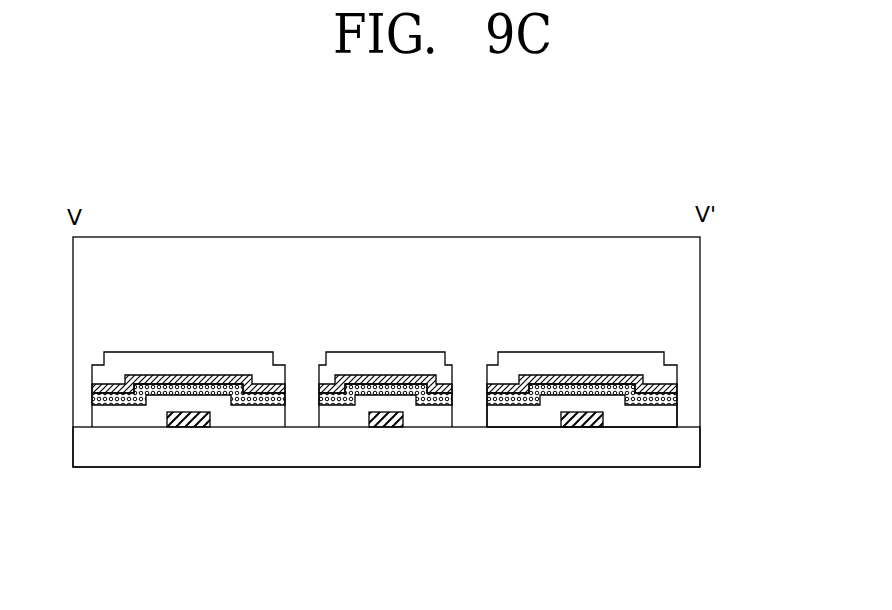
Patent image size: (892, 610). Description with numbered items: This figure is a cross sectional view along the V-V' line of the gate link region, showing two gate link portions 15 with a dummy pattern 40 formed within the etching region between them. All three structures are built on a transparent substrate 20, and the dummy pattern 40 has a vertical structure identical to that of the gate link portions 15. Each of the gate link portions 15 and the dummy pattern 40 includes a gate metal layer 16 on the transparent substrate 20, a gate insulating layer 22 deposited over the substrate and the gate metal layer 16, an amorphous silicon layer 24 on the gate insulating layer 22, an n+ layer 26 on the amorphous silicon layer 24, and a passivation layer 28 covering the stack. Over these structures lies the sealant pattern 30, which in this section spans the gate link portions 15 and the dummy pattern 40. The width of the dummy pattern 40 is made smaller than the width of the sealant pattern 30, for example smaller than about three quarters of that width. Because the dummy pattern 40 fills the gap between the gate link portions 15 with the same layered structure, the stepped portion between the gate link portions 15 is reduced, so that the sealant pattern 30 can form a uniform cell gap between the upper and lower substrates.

The gate link portion 15 is at (189, 342).
The dummy pattern 40 is at (392, 342).
The sealant pattern 30 is at (679, 278).
The passivation layer 28 is at (660, 367).
The n+ layer 26 is at (677, 385).
The amorphous silicon layer 24 is at (677, 398).
The gate insulating layer 22 is at (668, 414).
The transparent substrate 20 is at (675, 450).
The gate metal layer 16 is at (196, 427).